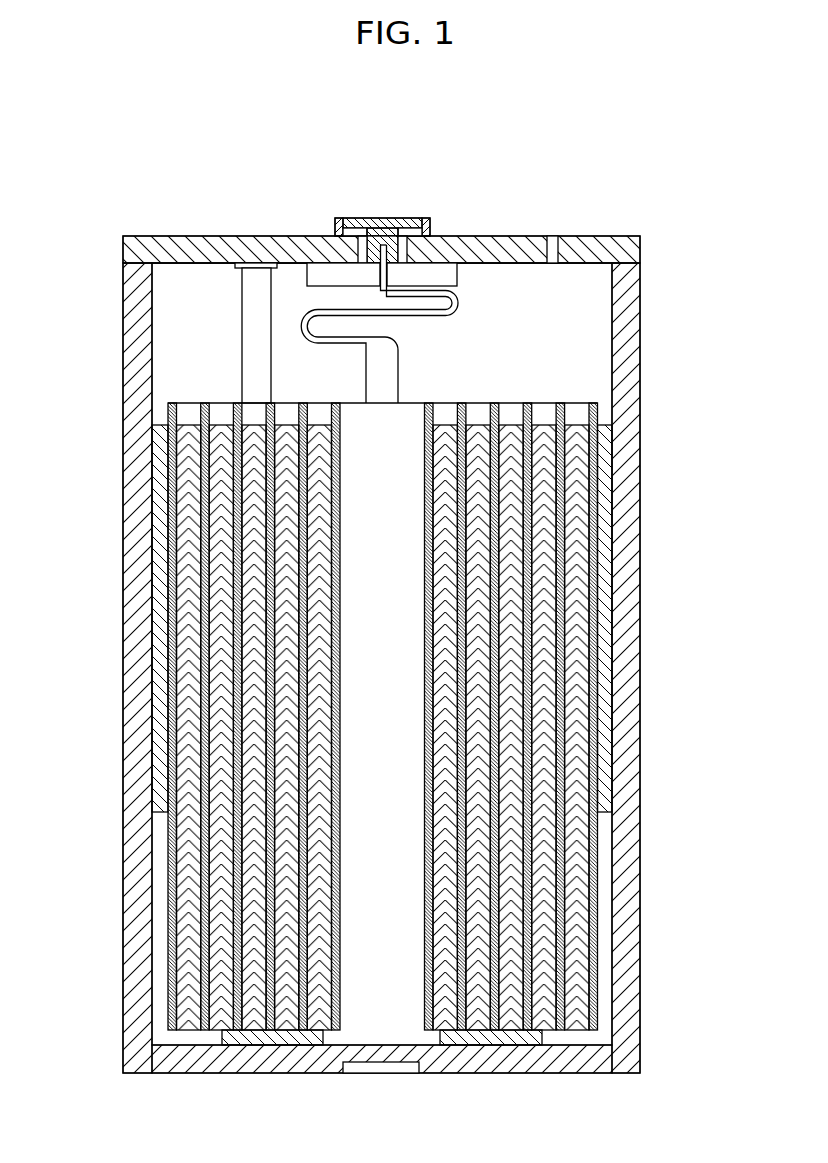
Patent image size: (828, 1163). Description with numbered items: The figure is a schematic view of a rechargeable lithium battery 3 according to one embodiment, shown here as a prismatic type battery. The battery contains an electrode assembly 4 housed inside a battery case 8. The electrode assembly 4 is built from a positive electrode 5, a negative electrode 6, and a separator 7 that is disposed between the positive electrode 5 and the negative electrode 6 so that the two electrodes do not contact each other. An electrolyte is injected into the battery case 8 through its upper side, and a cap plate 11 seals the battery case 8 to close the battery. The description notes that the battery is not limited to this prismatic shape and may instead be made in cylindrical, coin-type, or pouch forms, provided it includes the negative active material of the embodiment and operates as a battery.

The rechargeable lithium battery 3 is at (400, 616).
The electrode assembly 4 is at (389, 670).
The positive electrode 5 is at (578, 873).
The negative electrode 6 is at (218, 876).
The separator 7 is at (207, 937).
The battery case 8 is at (137, 335).
The cap plate 11 is at (487, 247).